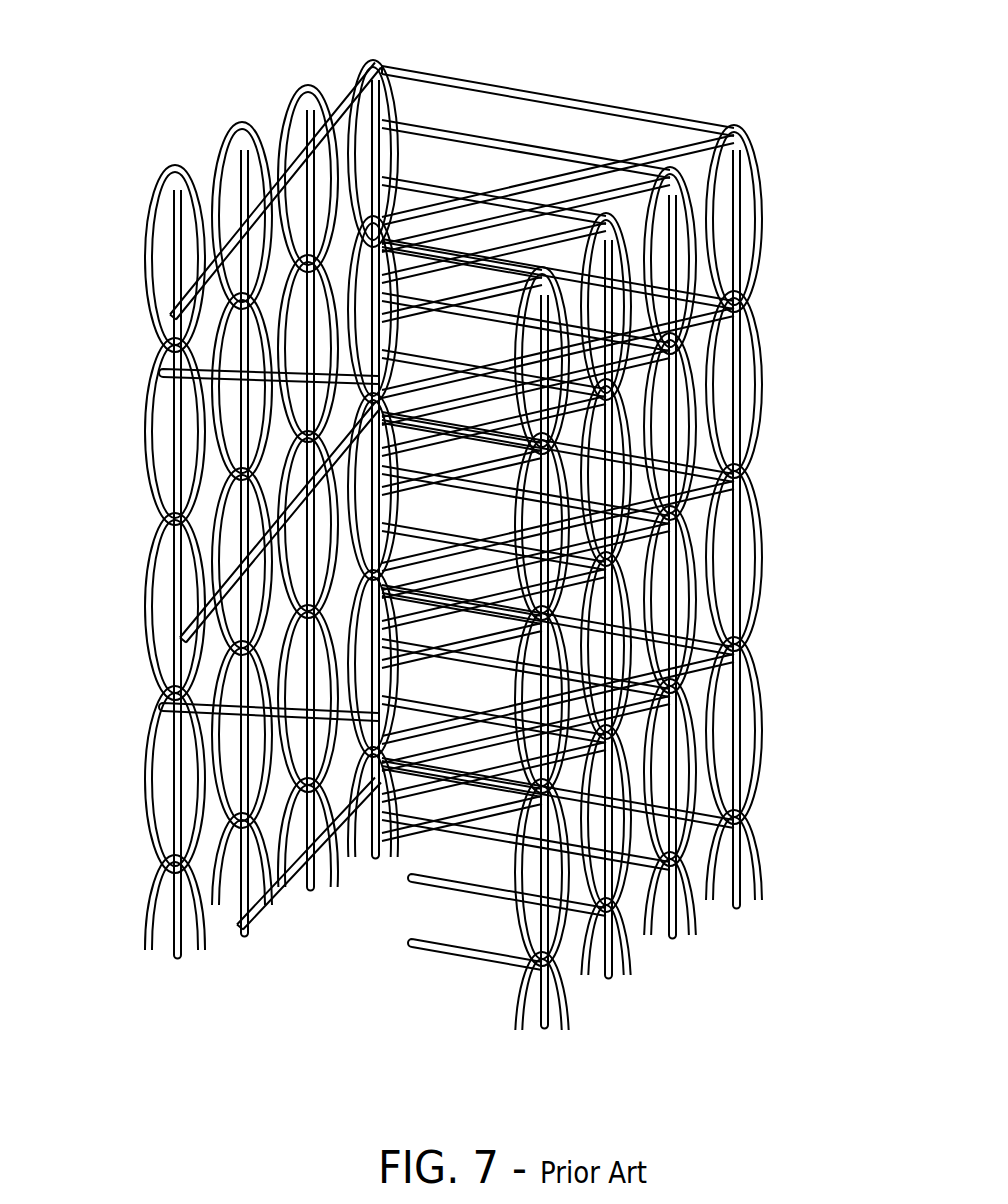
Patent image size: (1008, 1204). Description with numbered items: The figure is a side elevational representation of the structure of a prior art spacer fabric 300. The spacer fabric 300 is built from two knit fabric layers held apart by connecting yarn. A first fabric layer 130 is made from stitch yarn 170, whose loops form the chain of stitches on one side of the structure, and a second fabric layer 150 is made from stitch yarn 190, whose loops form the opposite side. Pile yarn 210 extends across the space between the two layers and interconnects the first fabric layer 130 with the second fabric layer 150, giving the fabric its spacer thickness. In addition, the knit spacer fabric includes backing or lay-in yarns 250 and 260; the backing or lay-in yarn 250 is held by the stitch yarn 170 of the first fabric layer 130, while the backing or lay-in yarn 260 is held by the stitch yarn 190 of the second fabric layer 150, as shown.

The first fabric layer 130 is at (231, 110).
The second fabric layer 150 is at (814, 221).
The stitch yarn 170 is at (172, 162).
The stitch yarn 190 is at (750, 707).
The pile yarn 210 is at (523, 92).
The backing or lay-in yarn 250 is at (172, 356).
The backing or lay-in yarn 260 is at (740, 502).
The prior art spacer fabric 300 is at (439, 1002).